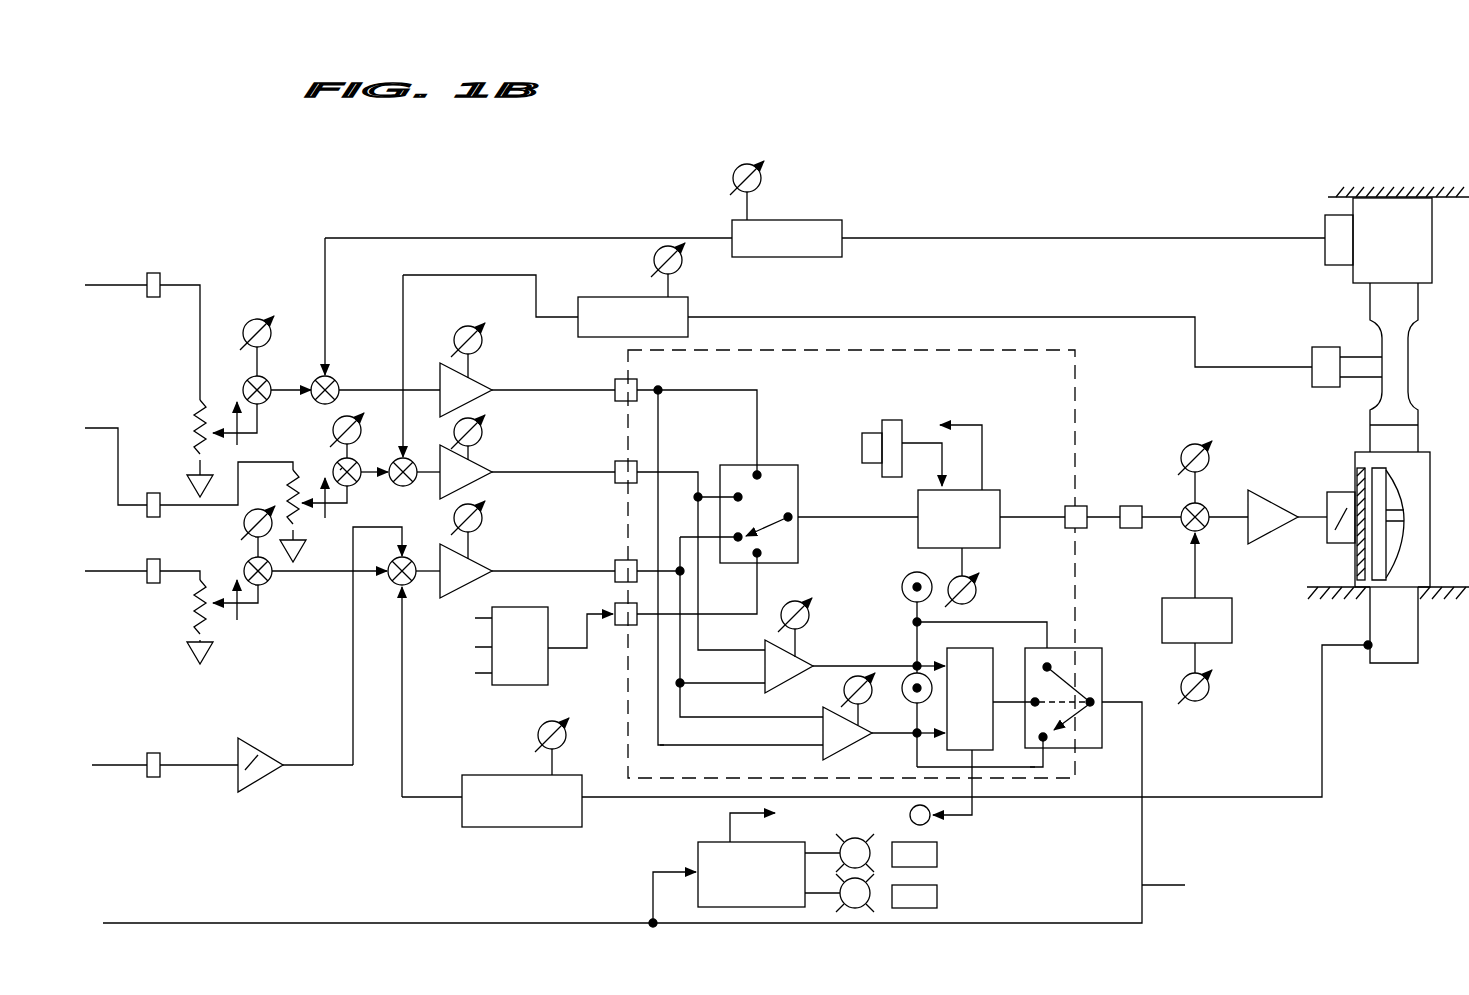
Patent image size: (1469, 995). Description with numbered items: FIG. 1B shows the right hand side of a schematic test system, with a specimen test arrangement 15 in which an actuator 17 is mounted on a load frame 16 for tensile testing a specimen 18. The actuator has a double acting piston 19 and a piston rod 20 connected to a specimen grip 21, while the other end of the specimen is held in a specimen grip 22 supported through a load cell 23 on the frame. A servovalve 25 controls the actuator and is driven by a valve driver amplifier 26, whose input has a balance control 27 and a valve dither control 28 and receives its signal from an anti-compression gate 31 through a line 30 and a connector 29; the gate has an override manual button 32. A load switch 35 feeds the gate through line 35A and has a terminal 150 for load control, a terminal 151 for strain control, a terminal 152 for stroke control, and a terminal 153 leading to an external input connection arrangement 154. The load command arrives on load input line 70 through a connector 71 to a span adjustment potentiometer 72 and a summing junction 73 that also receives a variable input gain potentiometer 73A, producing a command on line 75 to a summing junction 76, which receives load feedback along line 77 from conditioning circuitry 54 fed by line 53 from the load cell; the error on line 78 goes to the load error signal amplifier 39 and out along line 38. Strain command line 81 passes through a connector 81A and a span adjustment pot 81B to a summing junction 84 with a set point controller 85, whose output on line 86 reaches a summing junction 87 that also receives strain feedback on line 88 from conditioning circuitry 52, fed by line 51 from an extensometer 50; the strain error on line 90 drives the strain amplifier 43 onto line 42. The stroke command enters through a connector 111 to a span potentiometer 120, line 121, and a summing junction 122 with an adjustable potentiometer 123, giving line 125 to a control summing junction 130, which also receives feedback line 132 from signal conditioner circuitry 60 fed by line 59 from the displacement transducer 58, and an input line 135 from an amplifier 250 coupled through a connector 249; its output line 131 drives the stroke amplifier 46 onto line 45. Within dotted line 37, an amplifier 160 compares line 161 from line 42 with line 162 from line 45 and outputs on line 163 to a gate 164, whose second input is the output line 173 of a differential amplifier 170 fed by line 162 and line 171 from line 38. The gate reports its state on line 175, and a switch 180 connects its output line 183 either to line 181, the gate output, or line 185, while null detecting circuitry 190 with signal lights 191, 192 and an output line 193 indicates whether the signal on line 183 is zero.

The load input line 70 is at (106, 283).
The connector 71 is at (156, 272).
The variable input gain potentiometer 73A is at (247, 323).
The summing junction 73 is at (268, 372).
The span adjustment potentiometer 72 is at (222, 420).
The line 75 is at (289, 386).
The summing junction 76 is at (333, 373).
The line 78 is at (356, 388).
The line 88 is at (478, 275).
The set point controller 85 is at (333, 418).
The line 86 is at (334, 455).
The summing junction 84 is at (352, 484).
The line 90 is at (412, 486).
The line 81 is at (100, 426).
The connector 81A is at (154, 490).
The span adjustment pot 81B is at (316, 520).
The adjustable potentiometer 123 is at (244, 525).
The summing junction 122 is at (264, 588).
The connector 111 is at (153, 583).
The span potentiometer 120 is at (208, 665).
The line 121 is at (239, 628).
The line 125 is at (340, 578).
The control summing junction 130 is at (408, 590).
The output line 131 is at (406, 586).
The feedback signal line 132 is at (400, 795).
The input line 135 is at (350, 742).
The connector 249 is at (155, 780).
The amplifier 250 is at (268, 775).
The summing junction 87 is at (455, 345).
The load control error signal amplifier 39 is at (483, 387).
The line 38 is at (552, 388).
The strain control error signal amplifier 43 is at (483, 468).
The line 42 is at (560, 470).
The stroke control signal amplifier 46 is at (483, 567).
The line 45 is at (560, 569).
The input connection arrangement 154 is at (548, 665).
The line 77 is at (643, 237).
The conditioning circuitry 54 is at (842, 222).
The line 53 is at (1000, 238).
The conditioning circuitry 52 is at (692, 300).
The line 51 is at (1000, 317).
The dotted line 37 is at (1078, 385).
The load switch 35 is at (768, 462).
The terminal 151 is at (736, 490).
The terminal 150 is at (760, 473).
The terminal 152 is at (795, 522).
The terminal 153 is at (762, 556).
The line 161 is at (700, 592).
The line 162 is at (688, 670).
The line 171 is at (688, 750).
The line 35A is at (882, 515).
The amplifier 160 is at (808, 650).
The line 163 is at (866, 665).
The output line 173 is at (877, 732).
The differential amplifier 170 is at (840, 760).
The override manual button 32 is at (898, 418).
The anti-compression gate 31 is at (1000, 490).
The line 30 is at (1032, 515).
The connector 29 is at (1080, 506).
The balance control 27 is at (1186, 445).
The valve dither control 28 is at (1232, 628).
The valve driver amplifier 26 is at (1262, 540).
The servovalve 25 is at (1326, 545).
The gate 164 is at (980, 648).
The line 181 is at (1040, 622).
The switch 180 is at (1102, 672).
The output line 183 is at (1185, 888).
The line 175 is at (980, 808).
The line 185 is at (1035, 768).
The signal conditioner circuitry 60 is at (556, 830).
The line 59 is at (1285, 798).
The null detecting circuitry 190 is at (696, 858).
The output line 193 is at (722, 828).
The signal light 191 is at (848, 838).
The signal light 192 is at (862, 908).
The load frame 16 is at (1393, 195).
The specimen test arrangement 15 is at (1318, 212).
The load cell 23 is at (1432, 235).
The specimen grip 22 is at (1368, 300).
The specimen 18 is at (1395, 355).
The extensometer 50 is at (1312, 352).
The specimen grip 21 is at (1370, 440).
The actuator 17 is at (1358, 470).
The piston rod 20 is at (1395, 497).
The piston 19 is at (1400, 515).
The displacement transducer 58 is at (1395, 665).